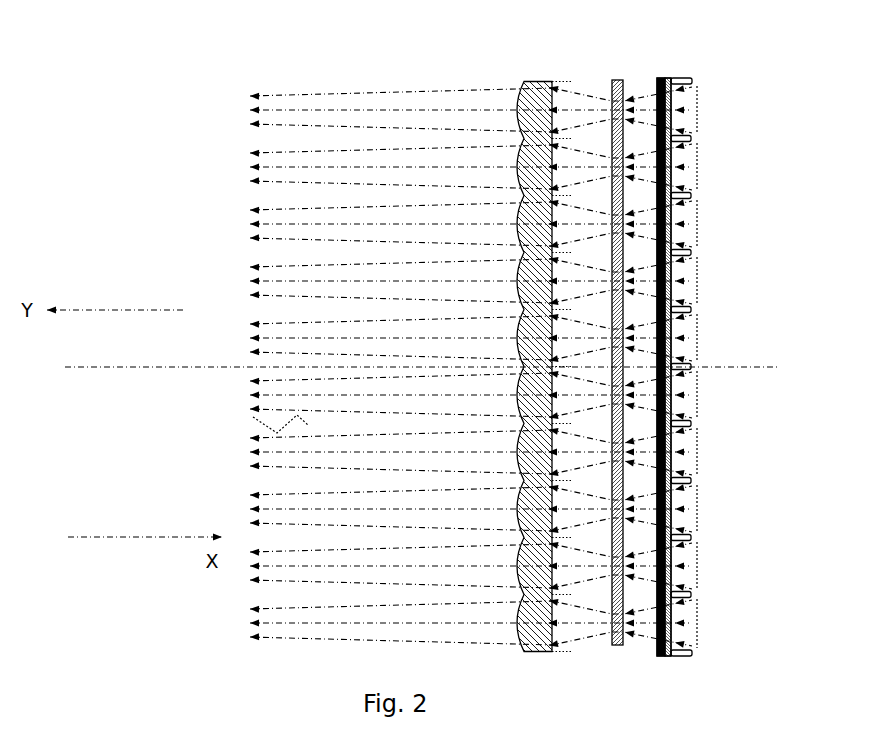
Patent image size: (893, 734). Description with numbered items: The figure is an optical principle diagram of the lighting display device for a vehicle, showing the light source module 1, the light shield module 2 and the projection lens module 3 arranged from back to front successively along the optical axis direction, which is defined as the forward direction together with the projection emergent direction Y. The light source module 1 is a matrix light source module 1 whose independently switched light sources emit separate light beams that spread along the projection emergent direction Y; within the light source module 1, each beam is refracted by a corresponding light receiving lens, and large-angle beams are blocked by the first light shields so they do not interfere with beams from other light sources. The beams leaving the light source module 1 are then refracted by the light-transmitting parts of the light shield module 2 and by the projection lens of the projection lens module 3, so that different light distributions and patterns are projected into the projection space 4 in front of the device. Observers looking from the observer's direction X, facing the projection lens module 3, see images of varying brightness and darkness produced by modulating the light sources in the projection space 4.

The light source module 1 is at (678, 75).
The light shield module 2 is at (620, 80).
The projection lens module 3 is at (538, 80).
The projection space 4 is at (277, 432).